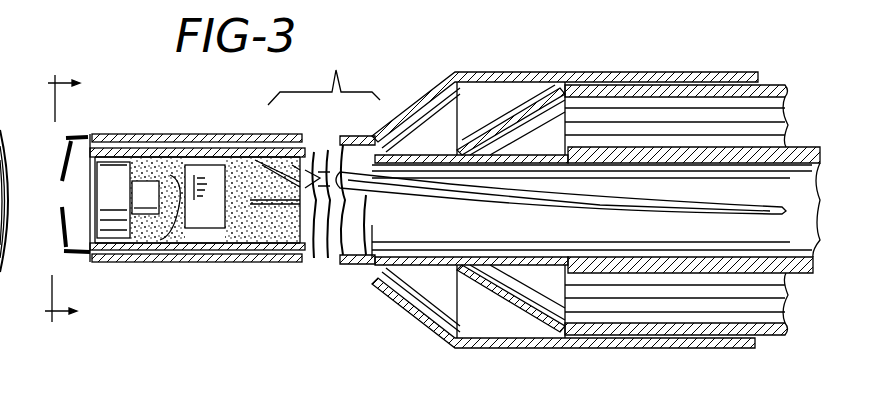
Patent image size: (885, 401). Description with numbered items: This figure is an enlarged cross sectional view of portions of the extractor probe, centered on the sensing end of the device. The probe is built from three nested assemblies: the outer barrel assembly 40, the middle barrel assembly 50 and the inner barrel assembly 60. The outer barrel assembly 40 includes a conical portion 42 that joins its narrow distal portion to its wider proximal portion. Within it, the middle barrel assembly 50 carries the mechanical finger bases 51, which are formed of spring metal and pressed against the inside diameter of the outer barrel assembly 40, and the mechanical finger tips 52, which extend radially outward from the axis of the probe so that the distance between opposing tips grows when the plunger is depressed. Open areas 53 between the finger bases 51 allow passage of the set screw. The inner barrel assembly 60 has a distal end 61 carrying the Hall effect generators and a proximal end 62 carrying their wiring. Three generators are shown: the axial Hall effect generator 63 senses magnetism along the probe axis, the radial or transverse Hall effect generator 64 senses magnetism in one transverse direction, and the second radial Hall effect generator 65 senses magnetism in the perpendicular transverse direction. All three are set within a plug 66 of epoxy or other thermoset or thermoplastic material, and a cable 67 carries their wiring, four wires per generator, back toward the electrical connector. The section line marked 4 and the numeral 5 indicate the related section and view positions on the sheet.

The section line 4- 4 is at (62, 196).
The conical portion 42 is at (11, 186).
The bore 5 is at (5, 232).
The mechanical finger tips 52 is at (62, 147).
The mechanical finger bases 51 is at (214, 136).
The distal end 61 is at (92, 188).
The axial Hall effect generator 63 is at (122, 242).
The radial or transverse Hall effect generator 64 is at (205, 242).
The second radial Hall effect generator 65 is at (290, 245).
The plug 66 is at (318, 242).
The open areas 53 is at (366, 140).
The cable 67 is at (385, 205).
The outer barrel assembly 40 is at (437, 80).
The middle barrel assembly 50 is at (484, 124).
The inner barrel assembly 60 is at (598, 142).
The proximal end 62 is at (818, 203).